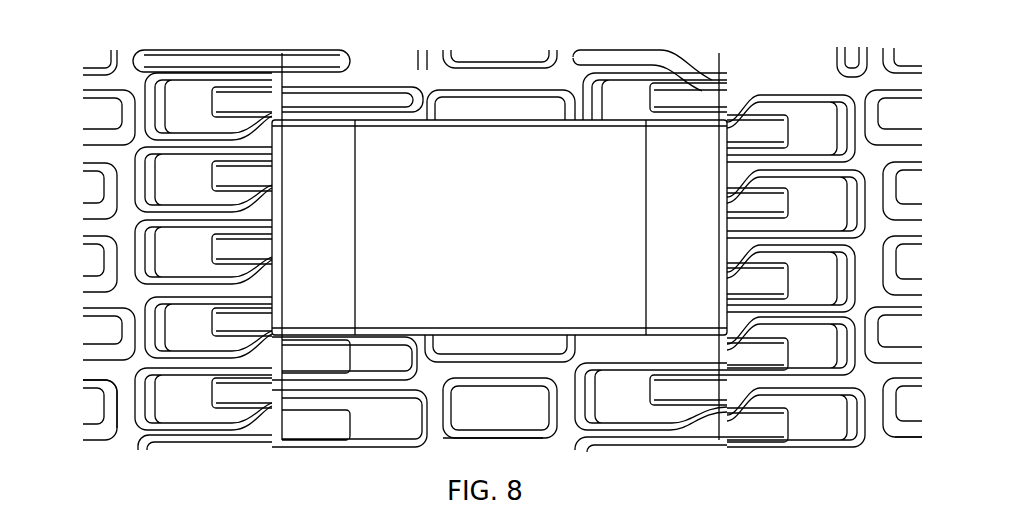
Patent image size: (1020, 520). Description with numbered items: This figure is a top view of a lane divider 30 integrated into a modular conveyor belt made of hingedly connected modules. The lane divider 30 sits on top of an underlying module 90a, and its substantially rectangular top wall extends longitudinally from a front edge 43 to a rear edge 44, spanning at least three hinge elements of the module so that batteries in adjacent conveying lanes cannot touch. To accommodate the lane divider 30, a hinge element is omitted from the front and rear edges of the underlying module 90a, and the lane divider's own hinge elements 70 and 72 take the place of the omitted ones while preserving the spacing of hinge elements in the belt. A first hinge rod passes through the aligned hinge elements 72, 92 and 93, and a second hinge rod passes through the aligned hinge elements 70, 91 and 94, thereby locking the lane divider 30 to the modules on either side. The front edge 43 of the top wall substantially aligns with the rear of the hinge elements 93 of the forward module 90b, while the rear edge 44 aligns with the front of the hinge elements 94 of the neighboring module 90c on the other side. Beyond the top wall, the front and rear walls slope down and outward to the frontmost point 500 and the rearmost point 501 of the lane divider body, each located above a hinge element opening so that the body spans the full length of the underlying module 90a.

The lane divider 30 is at (499, 227).
The front edge 43 is at (648, 148).
The rear edge 44 is at (360, 148).
The hinge element 70 is at (230, 244).
The hinge element 72 is at (775, 205).
The hinge element 91 is at (212, 392).
The hinge element 92 is at (780, 360).
The hinge element 93 is at (660, 388).
The hinge element 94 is at (298, 356).
The transition (front edge) 500 is at (730, 128).
The inflection point (rear edge) 501 is at (260, 143).
The underlying module 90a is at (437, 442).
The forward conveyor belt module 90b is at (880, 448).
The conveyor belt module 90c is at (128, 440).